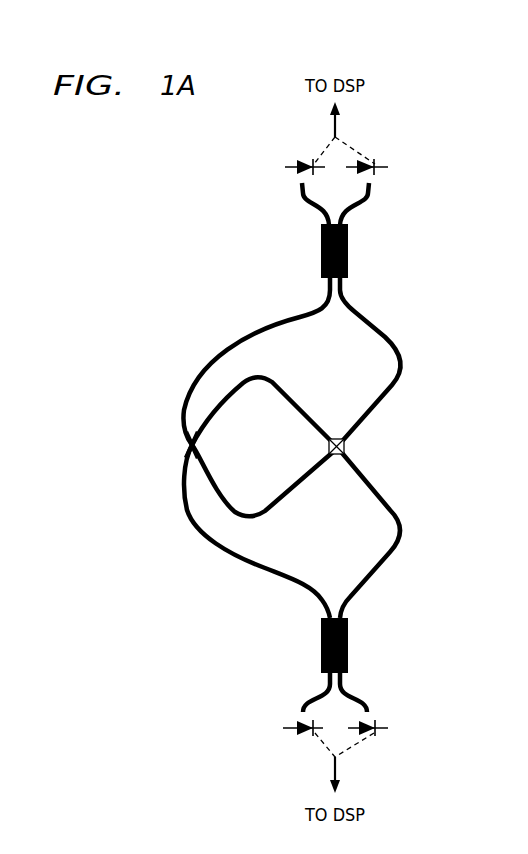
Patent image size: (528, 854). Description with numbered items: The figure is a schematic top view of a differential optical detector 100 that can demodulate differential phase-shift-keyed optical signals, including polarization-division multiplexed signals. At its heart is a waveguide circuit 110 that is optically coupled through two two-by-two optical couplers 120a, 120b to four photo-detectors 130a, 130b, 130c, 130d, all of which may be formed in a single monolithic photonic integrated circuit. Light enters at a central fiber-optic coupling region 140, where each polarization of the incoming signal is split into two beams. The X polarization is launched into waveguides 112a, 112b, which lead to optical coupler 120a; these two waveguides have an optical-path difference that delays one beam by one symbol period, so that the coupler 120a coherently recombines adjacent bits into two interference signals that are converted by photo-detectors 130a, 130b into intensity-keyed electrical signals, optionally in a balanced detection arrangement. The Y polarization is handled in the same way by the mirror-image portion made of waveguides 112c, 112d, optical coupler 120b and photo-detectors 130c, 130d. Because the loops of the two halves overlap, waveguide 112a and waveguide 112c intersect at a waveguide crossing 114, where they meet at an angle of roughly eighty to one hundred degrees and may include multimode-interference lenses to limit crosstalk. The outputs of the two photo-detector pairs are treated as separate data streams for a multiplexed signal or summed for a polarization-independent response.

The differential optical detector 100 is at (137, 135).
The waveguide circuit 110 is at (297, 448).
The waveguide 112a is at (290, 393).
The waveguide 112b is at (380, 498).
The waveguide 112c is at (218, 485).
The waveguide 112d is at (381, 326).
The waveguide crossing 114 is at (176, 444).
The 2×2 optical coupler 120a is at (321, 642).
The 2×2 optical coupler 120b is at (321, 250).
The photo-detector 130a is at (300, 731).
The photo-detector 130b is at (368, 734).
The photo-detector 130c is at (299, 164).
The photo-detector 130d is at (372, 163).
The fiber-optic coupling region 140 is at (347, 452).